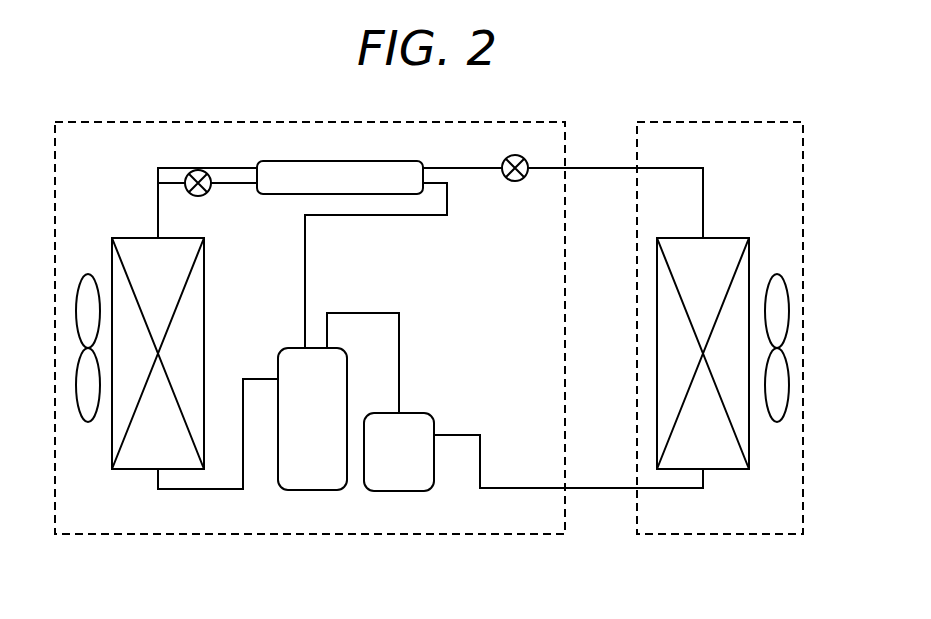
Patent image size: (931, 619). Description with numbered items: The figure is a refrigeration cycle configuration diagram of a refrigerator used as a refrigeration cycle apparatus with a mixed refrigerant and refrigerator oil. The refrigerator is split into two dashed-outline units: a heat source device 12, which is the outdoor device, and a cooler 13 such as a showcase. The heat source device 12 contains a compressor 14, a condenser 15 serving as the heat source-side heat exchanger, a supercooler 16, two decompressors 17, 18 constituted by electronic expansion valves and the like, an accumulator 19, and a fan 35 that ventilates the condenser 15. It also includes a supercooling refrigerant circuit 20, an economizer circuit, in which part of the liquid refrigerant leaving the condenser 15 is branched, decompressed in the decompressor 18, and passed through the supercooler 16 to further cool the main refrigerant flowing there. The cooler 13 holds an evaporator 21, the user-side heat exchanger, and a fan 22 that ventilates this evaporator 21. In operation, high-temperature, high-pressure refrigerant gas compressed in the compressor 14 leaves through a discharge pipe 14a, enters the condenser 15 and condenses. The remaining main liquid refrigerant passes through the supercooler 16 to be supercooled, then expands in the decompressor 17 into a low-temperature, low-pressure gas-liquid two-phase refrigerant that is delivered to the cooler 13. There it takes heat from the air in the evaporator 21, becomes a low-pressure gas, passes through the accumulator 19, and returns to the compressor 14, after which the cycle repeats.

The heat source device 12 is at (415, 535).
The cooler 13 is at (685, 535).
The compressor 14 is at (293, 350).
The discharge pipe 14a is at (257, 378).
The condenser 15 is at (132, 237).
The supercooler 16 is at (278, 160).
The decompressor 17 is at (515, 181).
The decompressor 18 is at (206, 195).
The accumulator 19 is at (418, 413).
The supercooling refrigerant circuit 20 is at (307, 268).
The evaporator 21 is at (728, 238).
The fan 22 is at (775, 425).
The fan 35 is at (86, 425).